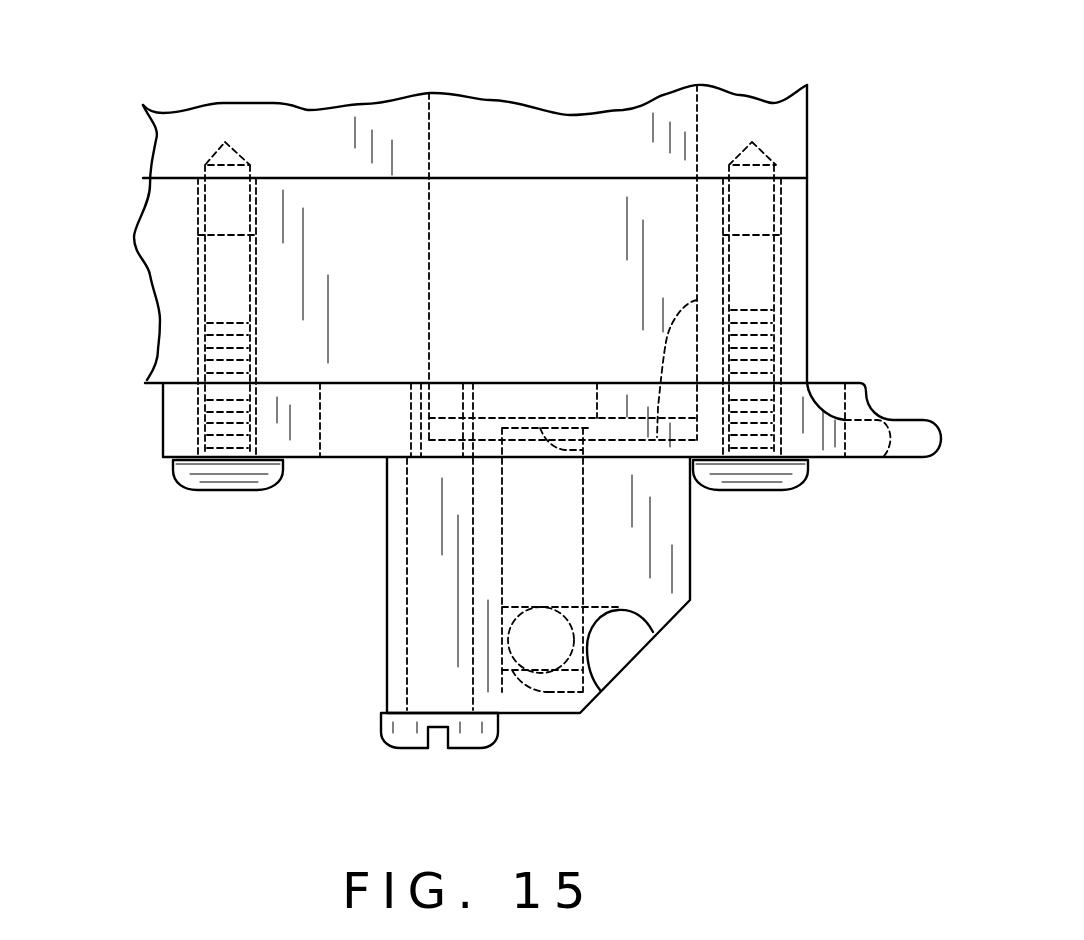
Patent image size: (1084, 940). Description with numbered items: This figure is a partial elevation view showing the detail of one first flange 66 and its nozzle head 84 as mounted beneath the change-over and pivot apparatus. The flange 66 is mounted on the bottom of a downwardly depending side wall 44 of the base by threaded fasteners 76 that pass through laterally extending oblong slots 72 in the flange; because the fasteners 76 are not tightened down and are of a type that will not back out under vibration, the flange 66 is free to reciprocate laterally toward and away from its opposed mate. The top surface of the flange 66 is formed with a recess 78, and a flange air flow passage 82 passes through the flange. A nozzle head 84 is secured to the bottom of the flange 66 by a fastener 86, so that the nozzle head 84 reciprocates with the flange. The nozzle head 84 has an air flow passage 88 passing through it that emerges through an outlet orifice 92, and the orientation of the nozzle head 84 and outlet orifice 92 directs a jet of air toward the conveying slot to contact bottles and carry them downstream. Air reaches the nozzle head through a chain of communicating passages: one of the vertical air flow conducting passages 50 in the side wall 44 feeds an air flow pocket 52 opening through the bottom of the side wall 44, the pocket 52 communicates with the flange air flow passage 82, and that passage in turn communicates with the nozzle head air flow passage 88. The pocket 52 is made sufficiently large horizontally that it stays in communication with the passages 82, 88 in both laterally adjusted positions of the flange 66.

The side wall 44 is at (808, 260).
The vertical air flow conducting passage 50 is at (432, 122).
The air flow conducting pocket 52 is at (464, 275).
The first flange 66 is at (917, 437).
The oblong slot 72 is at (304, 422).
The threaded fastener 76 is at (228, 490).
The recess 78 is at (697, 300).
The flange air flow passage 82 is at (537, 417).
The nozzle head 84 is at (388, 592).
The fastener 86 is at (400, 748).
The nozzle head air flow passage 88 is at (583, 515).
The outlet orifice 92 is at (624, 645).